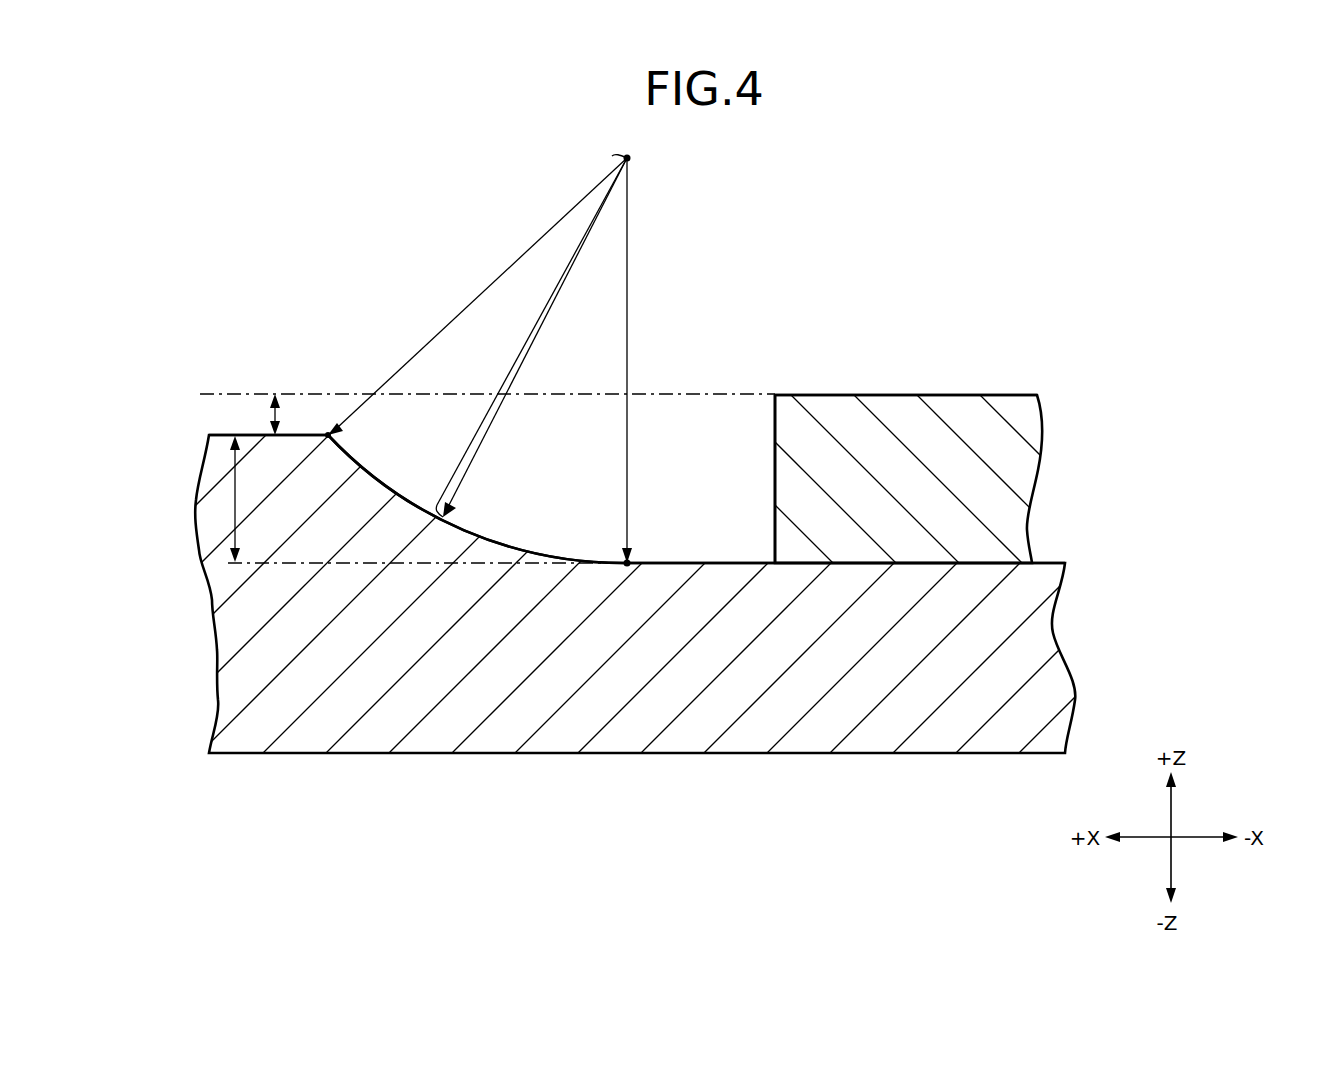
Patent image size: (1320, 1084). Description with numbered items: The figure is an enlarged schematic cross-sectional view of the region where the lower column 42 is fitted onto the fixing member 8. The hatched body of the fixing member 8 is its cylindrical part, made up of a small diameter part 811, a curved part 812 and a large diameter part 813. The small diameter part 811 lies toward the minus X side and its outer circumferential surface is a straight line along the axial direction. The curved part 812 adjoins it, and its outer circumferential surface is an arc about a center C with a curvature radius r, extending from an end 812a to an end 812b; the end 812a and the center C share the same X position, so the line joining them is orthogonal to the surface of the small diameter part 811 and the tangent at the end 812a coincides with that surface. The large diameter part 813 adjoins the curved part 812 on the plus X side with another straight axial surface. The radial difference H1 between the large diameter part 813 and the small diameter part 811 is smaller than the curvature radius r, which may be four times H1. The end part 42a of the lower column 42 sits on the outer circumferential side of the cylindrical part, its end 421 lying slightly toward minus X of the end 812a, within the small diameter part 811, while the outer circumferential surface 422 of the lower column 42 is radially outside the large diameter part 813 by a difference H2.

The fixing member 8 is at (1005, 615).
The small diameter part 811 is at (736, 563).
The curved part 812 is at (500, 541).
The end 812a is at (628, 562).
The end 812b is at (333, 435).
The large diameter part 813 is at (227, 435).
The lower column 42 is at (970, 406).
The end 421 is at (772, 426).
The outer circumferential surface 422 is at (893, 395).
The end part 42a is at (845, 418).
The center of curvature radius C is at (490, 354).
The curvature radius r is at (520, 346).
The difference H1 is at (235, 502).
The difference H2 is at (278, 416).